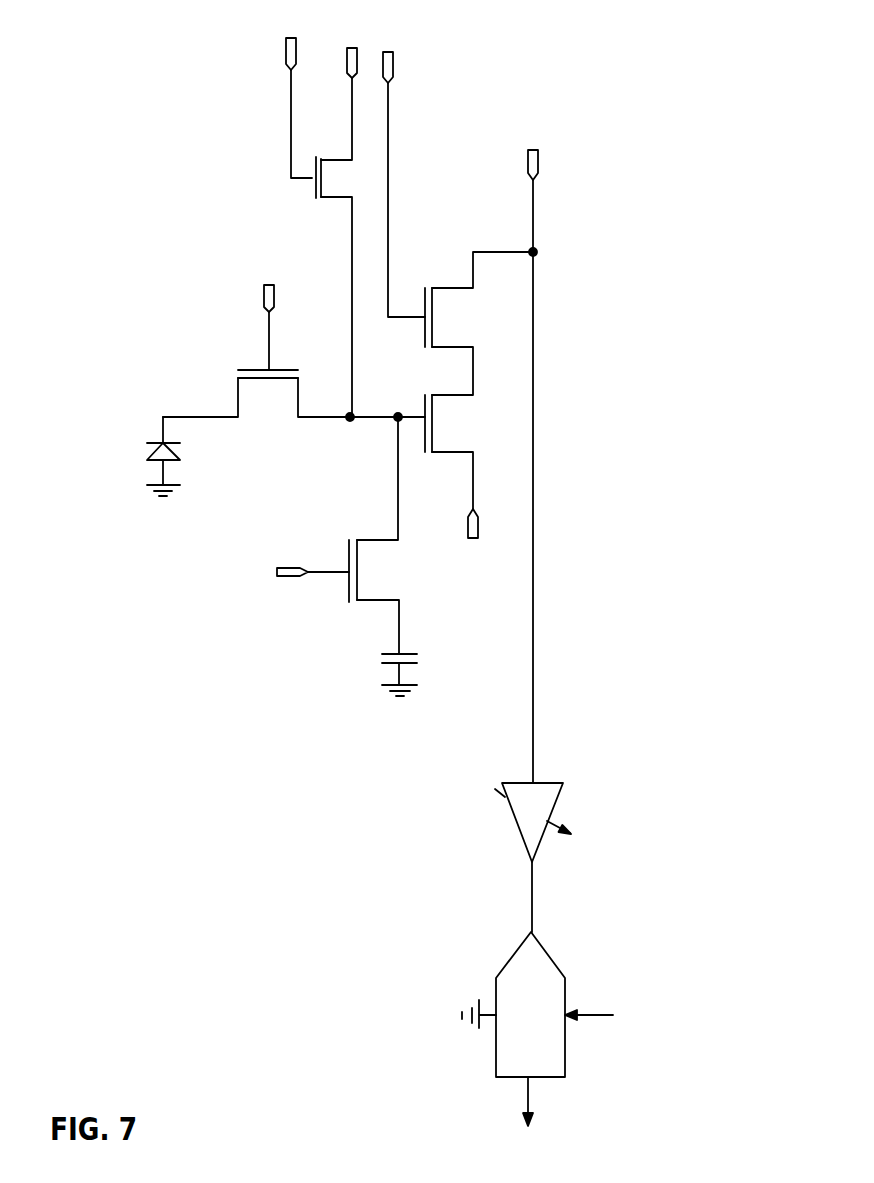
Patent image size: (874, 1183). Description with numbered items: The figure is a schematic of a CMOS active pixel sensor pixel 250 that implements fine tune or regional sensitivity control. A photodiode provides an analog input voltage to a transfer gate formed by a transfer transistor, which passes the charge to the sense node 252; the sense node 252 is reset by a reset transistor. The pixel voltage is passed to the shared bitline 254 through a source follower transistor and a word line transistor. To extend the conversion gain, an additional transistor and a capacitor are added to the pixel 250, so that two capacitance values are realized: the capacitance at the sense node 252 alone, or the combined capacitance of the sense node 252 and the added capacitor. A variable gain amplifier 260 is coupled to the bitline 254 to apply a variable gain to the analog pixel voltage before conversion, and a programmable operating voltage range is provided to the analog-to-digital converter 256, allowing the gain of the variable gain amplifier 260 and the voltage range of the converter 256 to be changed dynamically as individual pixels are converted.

The CMOS APS pixel 250 is at (426, 583).
The sense node 252 is at (350, 422).
The shared bitline 254 is at (538, 252).
The ADC 256 is at (565, 1057).
The variable gain amplifier (VGA) 260 is at (556, 797).